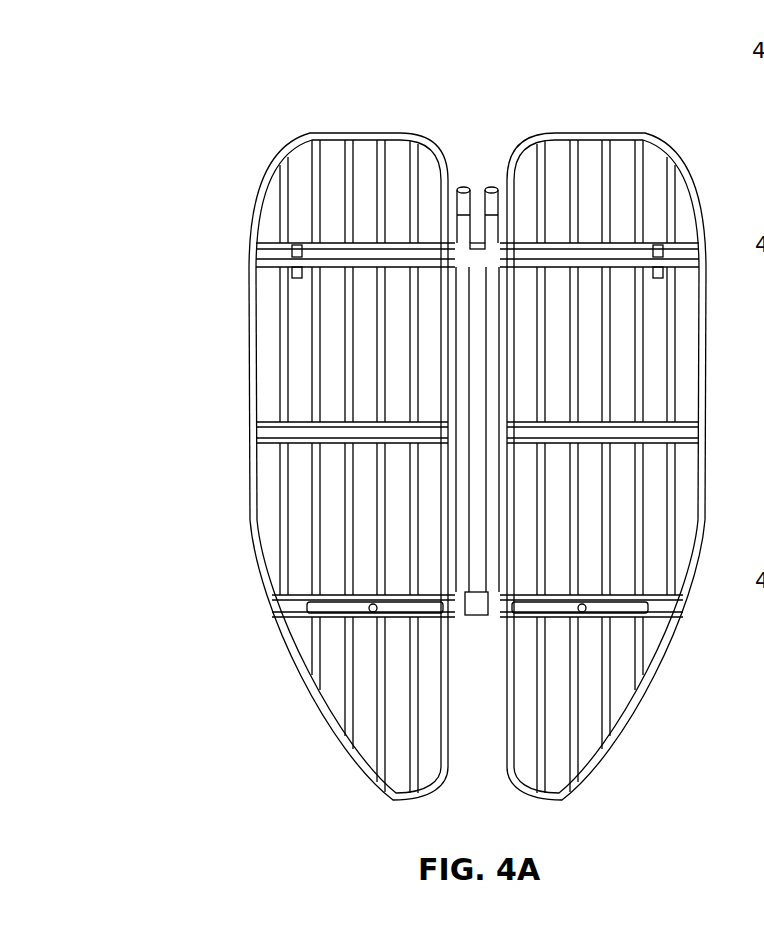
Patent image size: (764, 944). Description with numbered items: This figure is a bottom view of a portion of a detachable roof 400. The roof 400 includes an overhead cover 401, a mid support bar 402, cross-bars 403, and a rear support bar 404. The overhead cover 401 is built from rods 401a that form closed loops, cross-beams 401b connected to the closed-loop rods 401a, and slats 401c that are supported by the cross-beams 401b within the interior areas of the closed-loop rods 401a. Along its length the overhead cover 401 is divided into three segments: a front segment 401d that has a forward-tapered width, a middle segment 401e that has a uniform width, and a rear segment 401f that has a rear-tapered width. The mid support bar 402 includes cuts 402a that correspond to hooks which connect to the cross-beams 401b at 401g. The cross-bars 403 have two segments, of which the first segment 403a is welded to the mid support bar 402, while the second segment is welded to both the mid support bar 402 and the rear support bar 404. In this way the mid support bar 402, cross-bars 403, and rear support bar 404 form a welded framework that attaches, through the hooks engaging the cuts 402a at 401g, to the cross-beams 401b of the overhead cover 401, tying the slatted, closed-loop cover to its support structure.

The roof 400 is at (441, 419).
The overhead cover 401 is at (443, 466).
The rods 401a is at (253, 360).
The cross-beams 401b is at (273, 443).
The slats 401c is at (635, 660).
The front segment 401d is at (234, 188).
The middle segment 401e is at (229, 390).
The rear segment 401f is at (262, 665).
The hook connection to cross-beams 401g is at (300, 277).
The mid support bar 402 is at (292, 251).
The cuts 402a is at (660, 250).
The cross-bars 403 is at (490, 161).
The first segment 403a is at (462, 187).
The rear support bar 404 is at (478, 615).